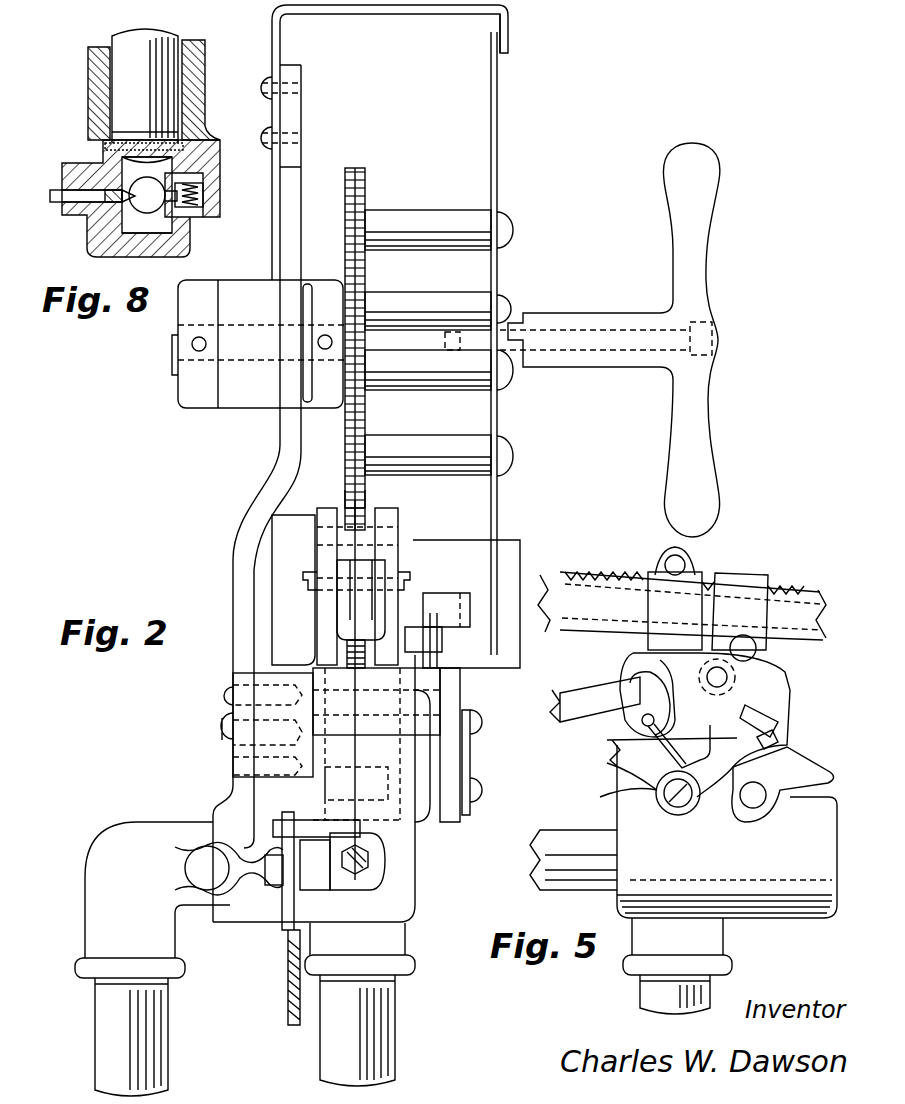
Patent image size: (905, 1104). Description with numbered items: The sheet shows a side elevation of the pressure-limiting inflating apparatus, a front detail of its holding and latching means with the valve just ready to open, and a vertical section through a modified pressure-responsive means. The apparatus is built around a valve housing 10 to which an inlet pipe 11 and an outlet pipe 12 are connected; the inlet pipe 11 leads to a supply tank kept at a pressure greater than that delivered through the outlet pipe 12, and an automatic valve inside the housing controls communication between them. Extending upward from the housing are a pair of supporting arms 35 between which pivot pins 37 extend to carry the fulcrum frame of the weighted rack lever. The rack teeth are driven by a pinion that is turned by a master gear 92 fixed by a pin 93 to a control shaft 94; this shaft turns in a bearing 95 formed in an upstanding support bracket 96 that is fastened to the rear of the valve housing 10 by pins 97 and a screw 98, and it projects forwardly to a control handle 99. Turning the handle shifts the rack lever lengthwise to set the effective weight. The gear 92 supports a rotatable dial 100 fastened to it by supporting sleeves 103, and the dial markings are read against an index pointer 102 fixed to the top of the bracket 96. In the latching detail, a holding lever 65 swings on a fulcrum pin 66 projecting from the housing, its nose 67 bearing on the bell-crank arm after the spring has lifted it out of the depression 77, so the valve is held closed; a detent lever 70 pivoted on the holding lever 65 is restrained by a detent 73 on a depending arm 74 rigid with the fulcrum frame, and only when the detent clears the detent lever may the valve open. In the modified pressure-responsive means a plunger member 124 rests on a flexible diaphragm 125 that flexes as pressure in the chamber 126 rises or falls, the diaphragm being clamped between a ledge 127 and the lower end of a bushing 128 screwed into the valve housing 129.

In FIG. 2, the valve housing 10 is at (268, 798).
In FIG. 5, the valve housing 10 is at (760, 918).
In FIG. 2, the inlet pipe 11 is at (320, 1046).
In FIG. 2, the outlet pipe 12 is at (112, 850).
In FIG. 2, the supporting arms 35 is at (327, 512).
In FIG. 2, the pivot pins 37 is at (305, 578).
In FIG. 5, the holding lever 65 is at (658, 752).
In FIG. 5, the fulcrum pin 66 is at (665, 792).
In FIG. 5, the nose 67 is at (612, 715).
In FIG. 5, the detent lever 70 is at (770, 708).
In FIG. 5, the detent 73 is at (775, 738).
In FIG. 5, the depending arm 74 is at (778, 781).
In FIG. 5, the depression 77 is at (637, 668).
In FIG. 2, the master gear 92 is at (355, 436).
In FIG. 2, the pin 93 is at (325, 335).
In FIG. 2, the control shaft 94 is at (510, 322).
In FIG. 2, the bearing 95 is at (243, 395).
In FIG. 2, the support bracket 96 is at (262, 500).
In FIG. 2, the pins 97 is at (226, 694).
In FIG. 2, the screw 98 is at (222, 726).
In FIG. 2, the control handle 99 is at (692, 263).
In FIG. 2, the rotatable dial 100 is at (497, 112).
In FIG. 2, the index pointer 102 is at (508, 20).
In FIG. 2, the supporting sleeves 103 is at (448, 218).
In FIG. 8, the plunger member 124 is at (152, 60).
In FIG. 8, the flexible diaphragm 125 is at (140, 153).
In FIG. 8, the chamber 126 is at (157, 217).
In FIG. 8, the ledge 127 is at (108, 160).
In FIG. 8, the bushing 128 is at (110, 143).
In FIG. 8, the valve housing 129 is at (100, 240).